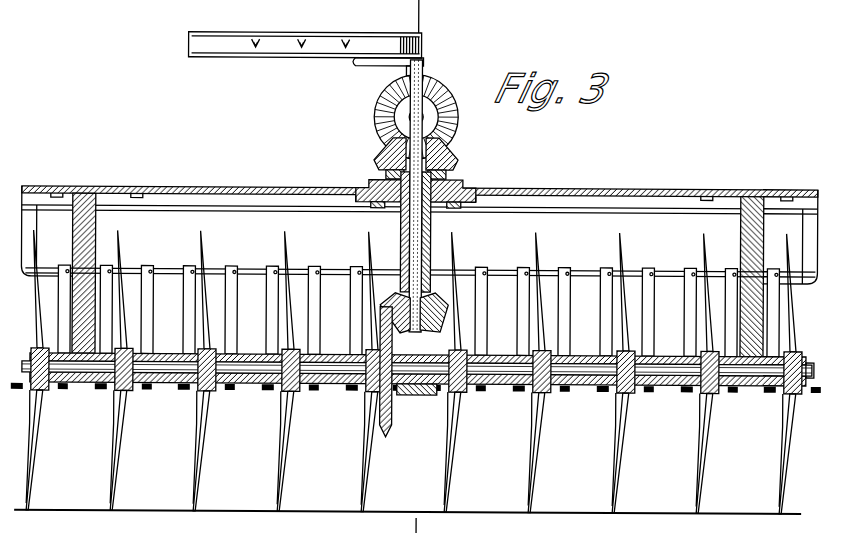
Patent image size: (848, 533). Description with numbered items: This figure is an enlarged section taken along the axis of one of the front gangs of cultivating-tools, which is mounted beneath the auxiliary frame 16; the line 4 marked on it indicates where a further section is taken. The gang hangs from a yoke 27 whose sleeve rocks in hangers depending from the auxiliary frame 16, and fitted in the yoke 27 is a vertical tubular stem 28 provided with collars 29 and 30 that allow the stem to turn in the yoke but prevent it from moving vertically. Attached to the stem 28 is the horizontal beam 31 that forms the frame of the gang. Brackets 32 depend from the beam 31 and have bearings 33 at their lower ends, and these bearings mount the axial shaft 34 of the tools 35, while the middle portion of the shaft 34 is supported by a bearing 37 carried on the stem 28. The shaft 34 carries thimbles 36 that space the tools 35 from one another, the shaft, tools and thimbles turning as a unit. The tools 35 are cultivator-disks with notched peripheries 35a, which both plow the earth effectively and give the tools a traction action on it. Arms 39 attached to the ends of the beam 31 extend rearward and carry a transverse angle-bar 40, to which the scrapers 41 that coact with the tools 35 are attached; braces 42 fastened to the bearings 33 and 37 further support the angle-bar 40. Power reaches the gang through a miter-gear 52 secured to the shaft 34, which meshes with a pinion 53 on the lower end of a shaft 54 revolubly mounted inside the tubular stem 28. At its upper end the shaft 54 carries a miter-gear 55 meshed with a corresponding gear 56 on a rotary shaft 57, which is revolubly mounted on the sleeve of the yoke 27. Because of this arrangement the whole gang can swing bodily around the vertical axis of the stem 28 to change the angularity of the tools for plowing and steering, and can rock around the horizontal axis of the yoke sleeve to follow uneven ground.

The section line 4 4 is at (424, 266).
The auxiliary frame 16 is at (238, 59).
The gear 56 is at (456, 106).
The rotary shaft 57 is at (408, 117).
The miter-gear 55 is at (448, 160).
The collar 29 is at (446, 176).
The yoke 27 is at (463, 189).
The horizontal beam 31 is at (556, 190).
The collar 30 is at (366, 204).
The arm 39 is at (36, 222).
The bracket 32 is at (97, 228).
The transverse angle-bar 40 is at (585, 277).
The scraper 41 is at (483, 328).
The shaft 54 is at (412, 237).
The vertical tubular stem 28 is at (432, 228).
The pinion 53 is at (441, 300).
The axial shaft 34 is at (668, 386).
The bearing 33 is at (80, 396).
The cultivating-tool 35 is at (623, 456).
The notched periphery 35a is at (533, 436).
The thimble 36 is at (660, 392).
The brace 42 is at (61, 394).
The miter-gear 52 is at (386, 434).
The bearing 37 is at (428, 396).